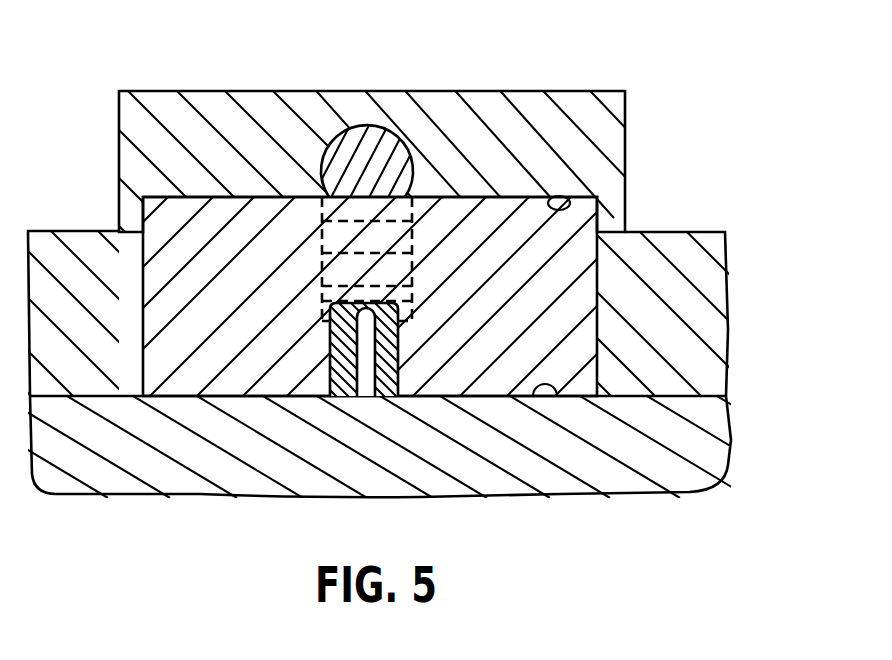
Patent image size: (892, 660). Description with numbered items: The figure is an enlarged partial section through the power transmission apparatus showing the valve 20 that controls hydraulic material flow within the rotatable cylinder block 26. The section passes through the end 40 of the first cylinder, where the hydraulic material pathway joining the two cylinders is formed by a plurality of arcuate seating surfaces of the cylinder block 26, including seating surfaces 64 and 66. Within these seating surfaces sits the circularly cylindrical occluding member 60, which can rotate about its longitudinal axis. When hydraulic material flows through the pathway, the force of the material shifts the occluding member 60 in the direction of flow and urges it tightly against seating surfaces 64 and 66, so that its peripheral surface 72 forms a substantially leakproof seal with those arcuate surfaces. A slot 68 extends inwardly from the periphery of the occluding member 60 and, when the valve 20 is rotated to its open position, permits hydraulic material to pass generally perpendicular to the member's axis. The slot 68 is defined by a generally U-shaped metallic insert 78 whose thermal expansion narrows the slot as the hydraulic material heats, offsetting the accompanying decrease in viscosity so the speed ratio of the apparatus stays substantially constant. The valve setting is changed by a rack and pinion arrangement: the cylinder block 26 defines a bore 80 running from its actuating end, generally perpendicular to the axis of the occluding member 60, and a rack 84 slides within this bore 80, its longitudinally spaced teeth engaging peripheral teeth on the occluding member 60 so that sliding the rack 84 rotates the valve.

The valve 20 is at (640, 190).
The cylinder block 26 is at (707, 233).
The end of cylinder 40 is at (358, 249).
The occluding member 60 is at (577, 297).
The seating surface 64 is at (571, 195).
The seating surface 66 is at (560, 392).
The slot 68 is at (365, 378).
The peripheral surface 72 is at (381, 125).
The U-shaped metallic insert 78 is at (335, 368).
The bore 80 is at (323, 193).
The rack 84 is at (390, 163).